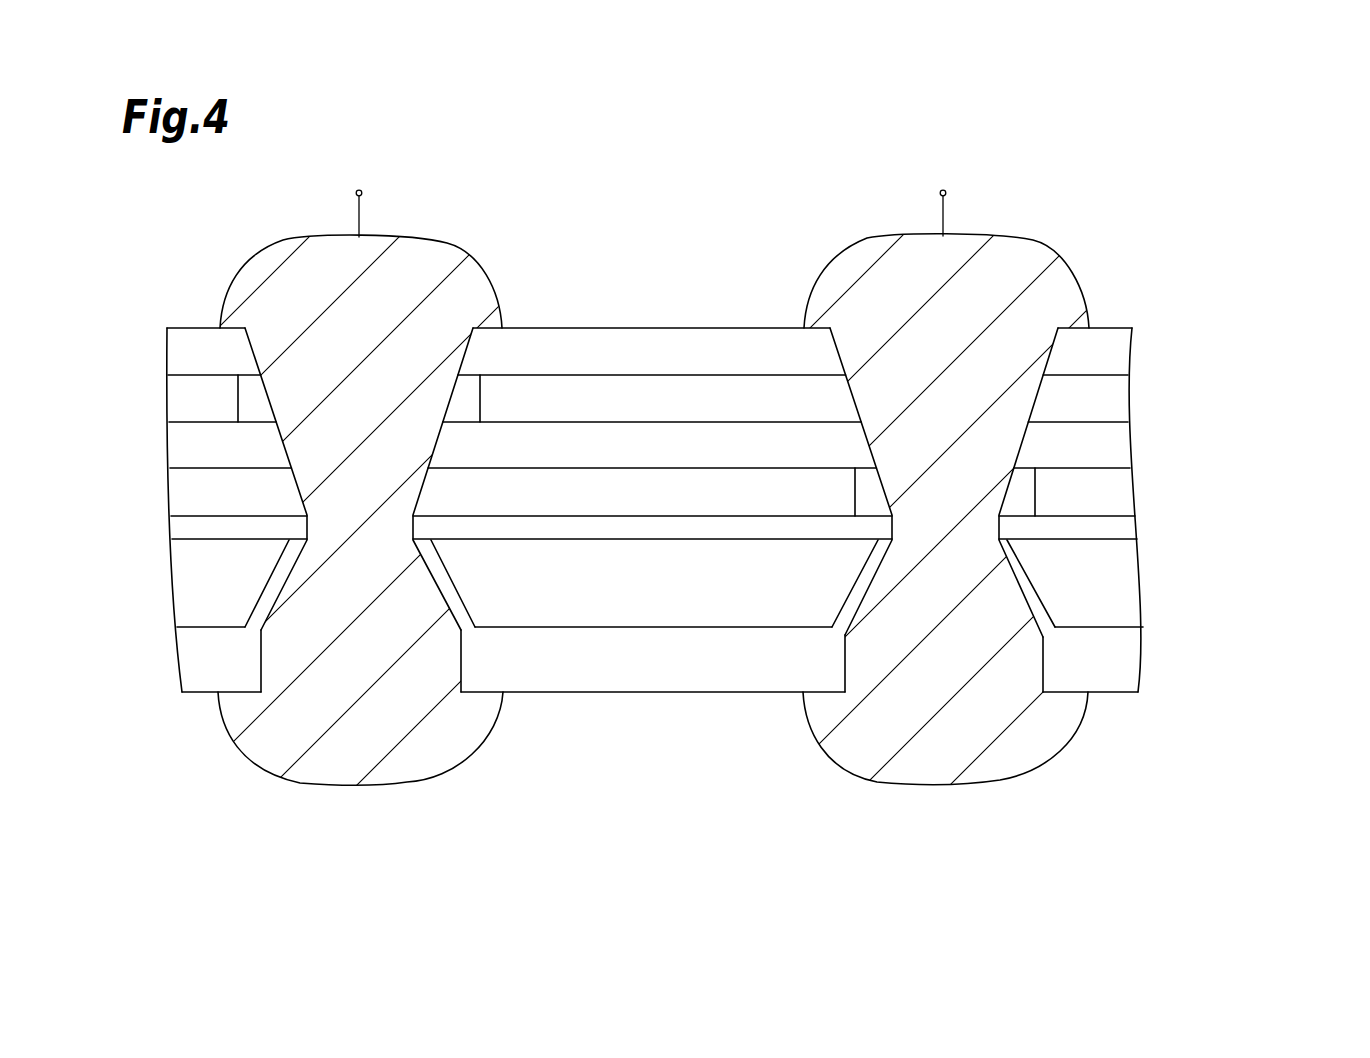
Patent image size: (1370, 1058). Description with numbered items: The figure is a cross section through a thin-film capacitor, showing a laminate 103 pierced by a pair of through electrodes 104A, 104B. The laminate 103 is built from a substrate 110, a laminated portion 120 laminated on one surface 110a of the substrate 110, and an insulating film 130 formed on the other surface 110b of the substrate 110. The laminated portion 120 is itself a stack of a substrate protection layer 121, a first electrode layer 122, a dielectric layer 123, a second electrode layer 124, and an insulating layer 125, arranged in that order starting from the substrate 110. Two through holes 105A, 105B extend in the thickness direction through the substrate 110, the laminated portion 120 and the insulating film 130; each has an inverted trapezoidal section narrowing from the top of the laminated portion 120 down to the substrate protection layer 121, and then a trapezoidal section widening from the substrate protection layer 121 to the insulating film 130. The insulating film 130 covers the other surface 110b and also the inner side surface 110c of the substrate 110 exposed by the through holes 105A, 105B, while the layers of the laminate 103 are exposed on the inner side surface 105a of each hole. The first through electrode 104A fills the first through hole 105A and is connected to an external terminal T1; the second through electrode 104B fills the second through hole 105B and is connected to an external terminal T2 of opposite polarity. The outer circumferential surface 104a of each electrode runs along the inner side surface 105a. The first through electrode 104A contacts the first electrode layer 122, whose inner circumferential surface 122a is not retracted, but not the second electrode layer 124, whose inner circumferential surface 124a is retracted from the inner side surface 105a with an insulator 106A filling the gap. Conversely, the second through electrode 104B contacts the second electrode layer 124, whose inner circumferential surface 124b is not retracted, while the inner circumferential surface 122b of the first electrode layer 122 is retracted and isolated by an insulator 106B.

The laminate 103 is at (1290, 423).
The first through electrode 104A is at (499, 232).
The second through electrode 104B is at (806, 232).
The outer circumferential surface 104a is at (432, 445).
The first through hole 105A is at (262, 349).
The second through hole 105B is at (1043, 349).
The inner side surface 105a is at (285, 450).
The insulator 106A is at (457, 412).
The insulator 106B is at (1020, 487).
The substrate 110 is at (1120, 586).
The one surface 110a is at (193, 539).
The other surface 110b is at (190, 628).
The inner side surface 110c is at (453, 583).
The laminated portion 120 is at (1222, 335).
The substrate protection layer 121 is at (1120, 528).
The first electrode layer 122 is at (1120, 492).
The inner circumferential surface 122a is at (416, 500).
The inner circumferential surface 122b is at (858, 495).
The dielectric layer 123 is at (1120, 445).
The second electrode layer 124 is at (1120, 398).
The inner circumferential surface 124a is at (263, 388).
The inner circumferential surface 124b is at (855, 397).
The insulating layer 125 is at (1120, 352).
The insulating film 130 is at (1120, 661).
The external terminal T1 is at (360, 198).
The external terminal T2 is at (944, 197).